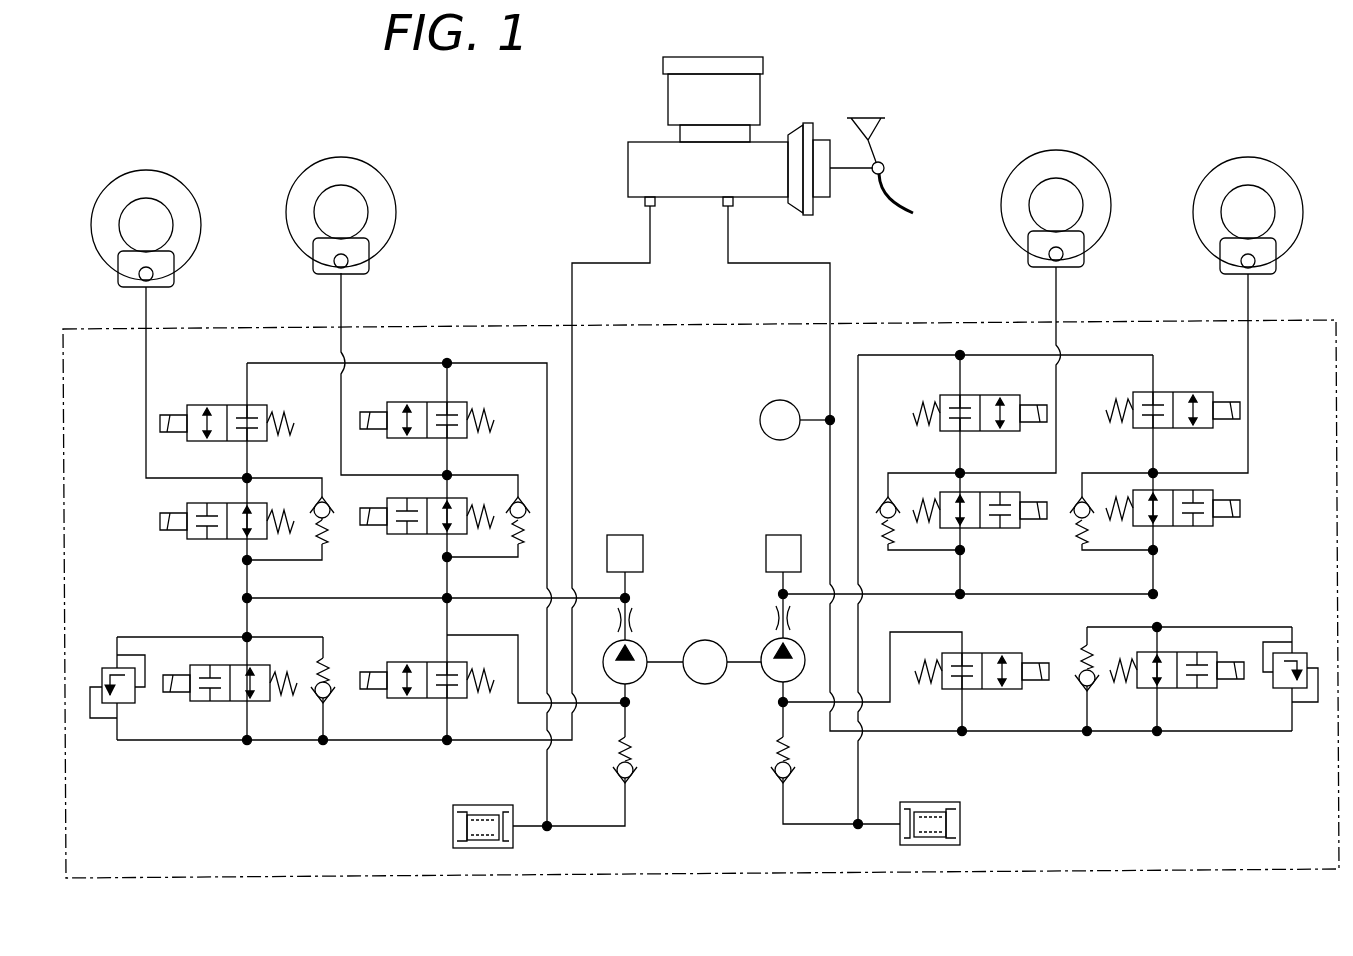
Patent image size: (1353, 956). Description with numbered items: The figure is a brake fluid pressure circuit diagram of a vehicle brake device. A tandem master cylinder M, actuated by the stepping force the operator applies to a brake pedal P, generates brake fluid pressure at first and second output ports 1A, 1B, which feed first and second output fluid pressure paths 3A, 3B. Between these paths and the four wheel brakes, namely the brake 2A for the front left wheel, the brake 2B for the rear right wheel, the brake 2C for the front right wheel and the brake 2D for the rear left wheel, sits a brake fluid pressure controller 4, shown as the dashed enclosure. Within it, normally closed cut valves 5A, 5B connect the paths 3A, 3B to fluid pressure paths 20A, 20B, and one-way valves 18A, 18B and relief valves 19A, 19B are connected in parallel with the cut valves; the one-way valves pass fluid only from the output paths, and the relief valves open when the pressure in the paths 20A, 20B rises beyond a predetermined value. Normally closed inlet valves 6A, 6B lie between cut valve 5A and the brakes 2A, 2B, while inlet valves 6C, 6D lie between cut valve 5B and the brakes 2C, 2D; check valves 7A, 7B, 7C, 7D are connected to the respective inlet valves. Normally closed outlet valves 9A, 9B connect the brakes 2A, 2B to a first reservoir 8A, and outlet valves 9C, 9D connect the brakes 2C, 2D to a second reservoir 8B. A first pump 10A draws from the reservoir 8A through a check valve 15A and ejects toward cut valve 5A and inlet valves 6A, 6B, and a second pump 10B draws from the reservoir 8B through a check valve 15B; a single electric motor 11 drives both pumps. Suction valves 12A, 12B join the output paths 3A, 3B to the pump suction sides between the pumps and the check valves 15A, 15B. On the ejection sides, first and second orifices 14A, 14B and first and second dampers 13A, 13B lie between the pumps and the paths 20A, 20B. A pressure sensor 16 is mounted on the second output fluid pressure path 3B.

The brake for front left wheel 2A is at (133, 172).
The brake for rear right wheel 2B is at (335, 157).
The brake for front right wheel 2C is at (1268, 157).
The brake for rear left wheel 2D is at (1068, 150).
The tandem master cylinder M is at (628, 165).
The brake pedal P is at (902, 193).
The first output port 1A is at (645, 207).
The second output port 1B is at (732, 207).
The first output fluid pressure path 3A is at (572, 268).
The second output fluid pressure path 3B is at (832, 268).
The brake fluid pressure controller 4 is at (414, 329).
The cut valve 5A is at (219, 701).
The cut valve 5B is at (1187, 688).
The inlet valve 6A is at (219, 539).
The inlet valve 6B is at (418, 535).
The inlet valve 6C is at (1180, 526).
The inlet valve 6D is at (990, 528).
The check valve 7A is at (323, 548).
The check valve 7B is at (525, 500).
The check valve 7C is at (1072, 497).
The check valve 7D is at (877, 498).
The first reservoir 8A is at (448, 803).
The second reservoir 8B is at (942, 800).
The outlet valve 9A is at (201, 405).
The outlet valve 9B is at (467, 402).
The outlet valve 9C is at (1182, 392).
The outlet valve 9D is at (976, 395).
The first pump 10A is at (645, 682).
The second pump 10B is at (768, 682).
The electric motor 11 is at (712, 684).
The suction valve 12A is at (400, 662).
The suction valve 12B is at (990, 653).
The first damper 13A is at (620, 535).
The second damper 13B is at (779, 535).
The first orifice 14A is at (634, 620).
The second orifice 14B is at (774, 617).
The check valve 15A is at (640, 782).
The check valve 15B is at (776, 784).
The pressure sensor 16 is at (768, 406).
The one-way valve 18A is at (332, 690).
The one-way valve 18B is at (1077, 686).
The relief valve 19A is at (102, 668).
The relief valve 19B is at (1292, 653).
The fluid pressure path 20A is at (465, 599).
The fluid pressure path 20B is at (1060, 592).